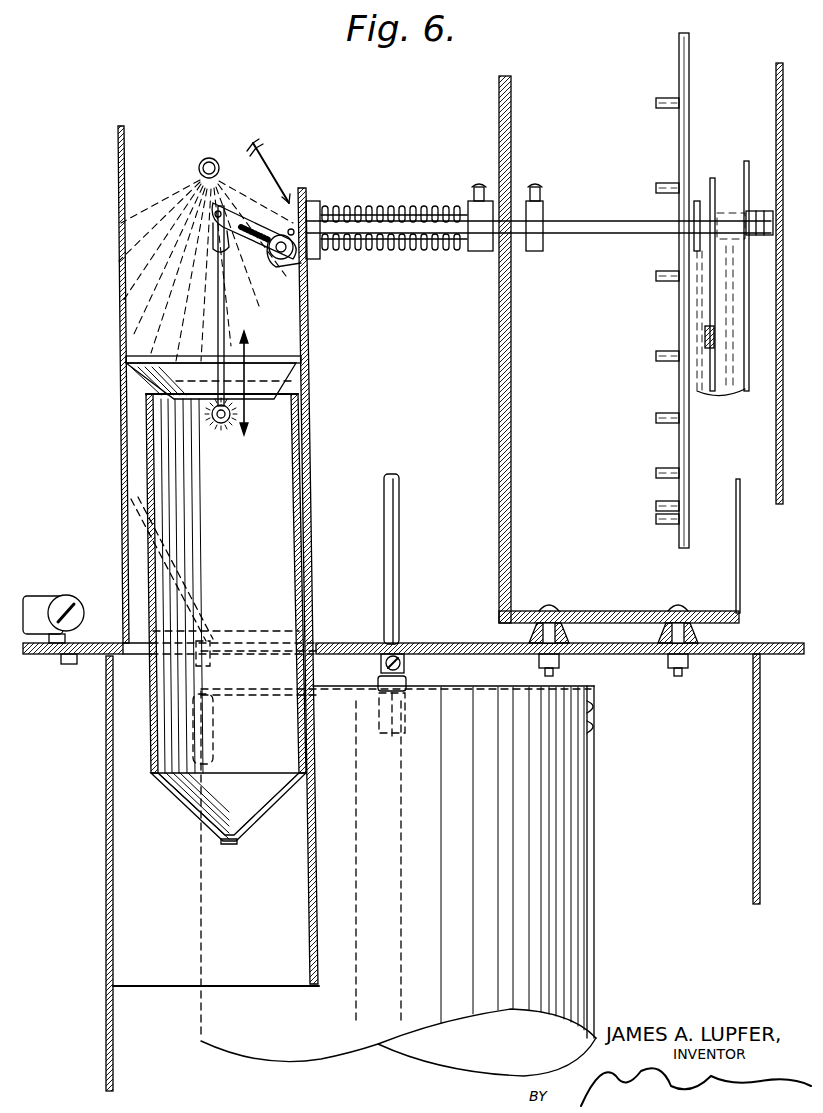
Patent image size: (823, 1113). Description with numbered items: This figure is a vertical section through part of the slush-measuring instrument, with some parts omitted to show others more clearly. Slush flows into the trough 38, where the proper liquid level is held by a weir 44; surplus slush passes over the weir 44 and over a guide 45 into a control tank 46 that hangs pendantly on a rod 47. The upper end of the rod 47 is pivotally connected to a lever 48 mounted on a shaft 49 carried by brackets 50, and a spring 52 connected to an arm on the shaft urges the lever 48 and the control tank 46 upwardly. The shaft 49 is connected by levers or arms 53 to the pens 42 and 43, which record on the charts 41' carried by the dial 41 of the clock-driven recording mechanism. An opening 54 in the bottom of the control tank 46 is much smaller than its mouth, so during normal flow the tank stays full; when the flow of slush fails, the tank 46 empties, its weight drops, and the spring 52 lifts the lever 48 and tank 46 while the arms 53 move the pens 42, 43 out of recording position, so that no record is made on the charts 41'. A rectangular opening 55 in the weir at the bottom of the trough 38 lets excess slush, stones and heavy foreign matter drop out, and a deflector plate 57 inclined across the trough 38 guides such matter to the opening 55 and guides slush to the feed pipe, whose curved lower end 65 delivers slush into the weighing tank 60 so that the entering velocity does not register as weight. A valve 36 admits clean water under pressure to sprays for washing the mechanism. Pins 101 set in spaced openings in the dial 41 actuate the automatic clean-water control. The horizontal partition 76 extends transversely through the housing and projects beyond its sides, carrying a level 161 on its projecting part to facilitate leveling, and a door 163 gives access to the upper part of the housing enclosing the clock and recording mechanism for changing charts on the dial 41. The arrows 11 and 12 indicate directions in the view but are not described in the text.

The direction arrow 11 is at (265, 156).
The direction arrow 12 is at (244, 382).
The valve 36 is at (197, 167).
The trough 38 is at (307, 316).
The dial 41 is at (675, 296).
The charts 41' is at (709, 290).
The pen 42 is at (748, 330).
The pen 43 is at (704, 336).
The weir 44 is at (290, 360).
The guide 45 is at (272, 386).
The control tank 46 is at (278, 462).
The rod 47 is at (216, 318).
The lever 48 is at (224, 203).
The shaft 49 is at (310, 258).
The brackets 50 is at (292, 256).
The spring 52 is at (406, 210).
The levers or arms 53 is at (700, 306).
The opening 54 is at (234, 846).
The opening 55 is at (265, 635).
The deflector plate 57 is at (133, 543).
The weighing tank 60 is at (590, 833).
The curved lower end 65 is at (399, 548).
The horizontal partition 76 is at (40, 658).
The pins 101 is at (664, 106).
The level 161 is at (47, 600).
The door 163 is at (776, 441).